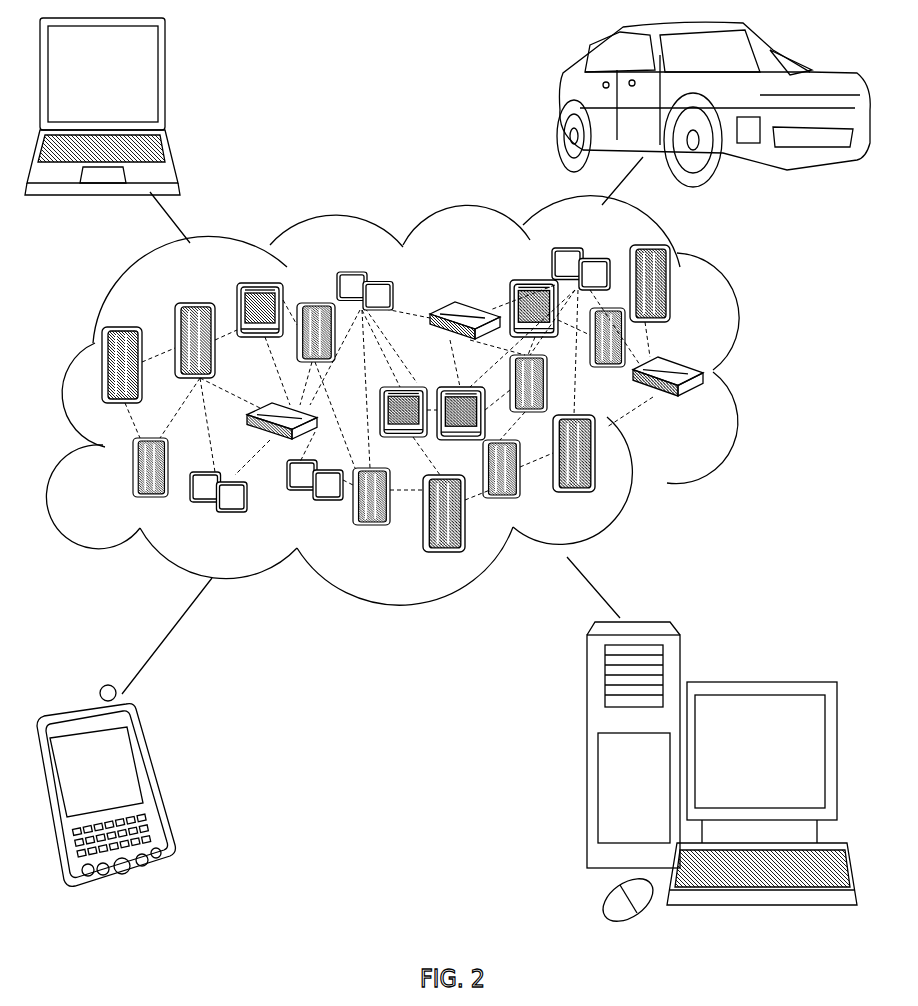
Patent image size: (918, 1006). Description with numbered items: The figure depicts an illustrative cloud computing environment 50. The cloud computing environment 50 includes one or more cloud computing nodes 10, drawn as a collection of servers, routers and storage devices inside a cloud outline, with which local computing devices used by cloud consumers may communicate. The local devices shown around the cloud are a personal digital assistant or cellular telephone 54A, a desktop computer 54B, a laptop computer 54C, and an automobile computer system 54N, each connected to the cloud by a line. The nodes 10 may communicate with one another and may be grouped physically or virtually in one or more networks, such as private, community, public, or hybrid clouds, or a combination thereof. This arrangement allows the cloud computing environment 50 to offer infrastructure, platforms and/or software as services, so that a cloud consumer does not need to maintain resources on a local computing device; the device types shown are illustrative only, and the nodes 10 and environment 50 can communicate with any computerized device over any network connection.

The cloud computing node 10 is at (447, 474).
The cloud computing environment 50 is at (755, 381).
The personal digital assistant or cellular telephone 54A is at (157, 783).
The desktop computer 54B is at (757, 682).
The laptop computer 54C is at (167, 83).
The automobile computer system 54N is at (560, 103).